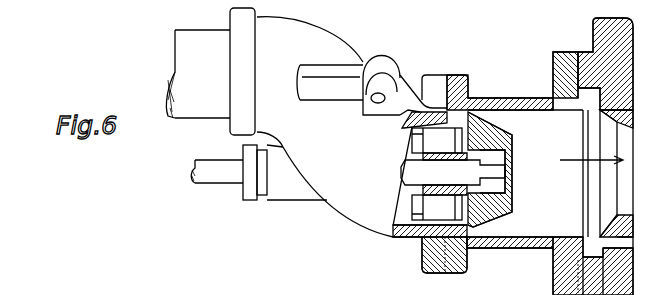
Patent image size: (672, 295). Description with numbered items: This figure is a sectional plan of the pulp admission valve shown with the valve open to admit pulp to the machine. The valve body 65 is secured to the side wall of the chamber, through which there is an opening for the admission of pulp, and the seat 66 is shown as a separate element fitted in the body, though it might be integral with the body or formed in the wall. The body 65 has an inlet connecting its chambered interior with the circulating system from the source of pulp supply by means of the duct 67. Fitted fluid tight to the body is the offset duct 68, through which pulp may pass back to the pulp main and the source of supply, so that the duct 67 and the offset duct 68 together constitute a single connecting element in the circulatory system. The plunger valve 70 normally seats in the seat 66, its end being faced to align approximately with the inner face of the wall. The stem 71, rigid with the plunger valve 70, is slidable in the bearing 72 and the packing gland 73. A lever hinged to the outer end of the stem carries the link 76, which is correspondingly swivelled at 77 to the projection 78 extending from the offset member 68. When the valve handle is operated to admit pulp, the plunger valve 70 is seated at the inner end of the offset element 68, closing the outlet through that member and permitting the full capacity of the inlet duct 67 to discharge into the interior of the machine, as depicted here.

The valve body 65 is at (531, 101).
The seat 66 is at (626, 117).
The duct 67 is at (200, 48).
The offset duct 68 is at (352, 201).
The plunger valve 70 is at (509, 150).
The stem 71 is at (420, 169).
The bearing 72 is at (430, 202).
The packing gland 73 is at (261, 185).
The link 76 is at (328, 90).
The swivel 77 is at (386, 100).
The projection 78 is at (374, 118).